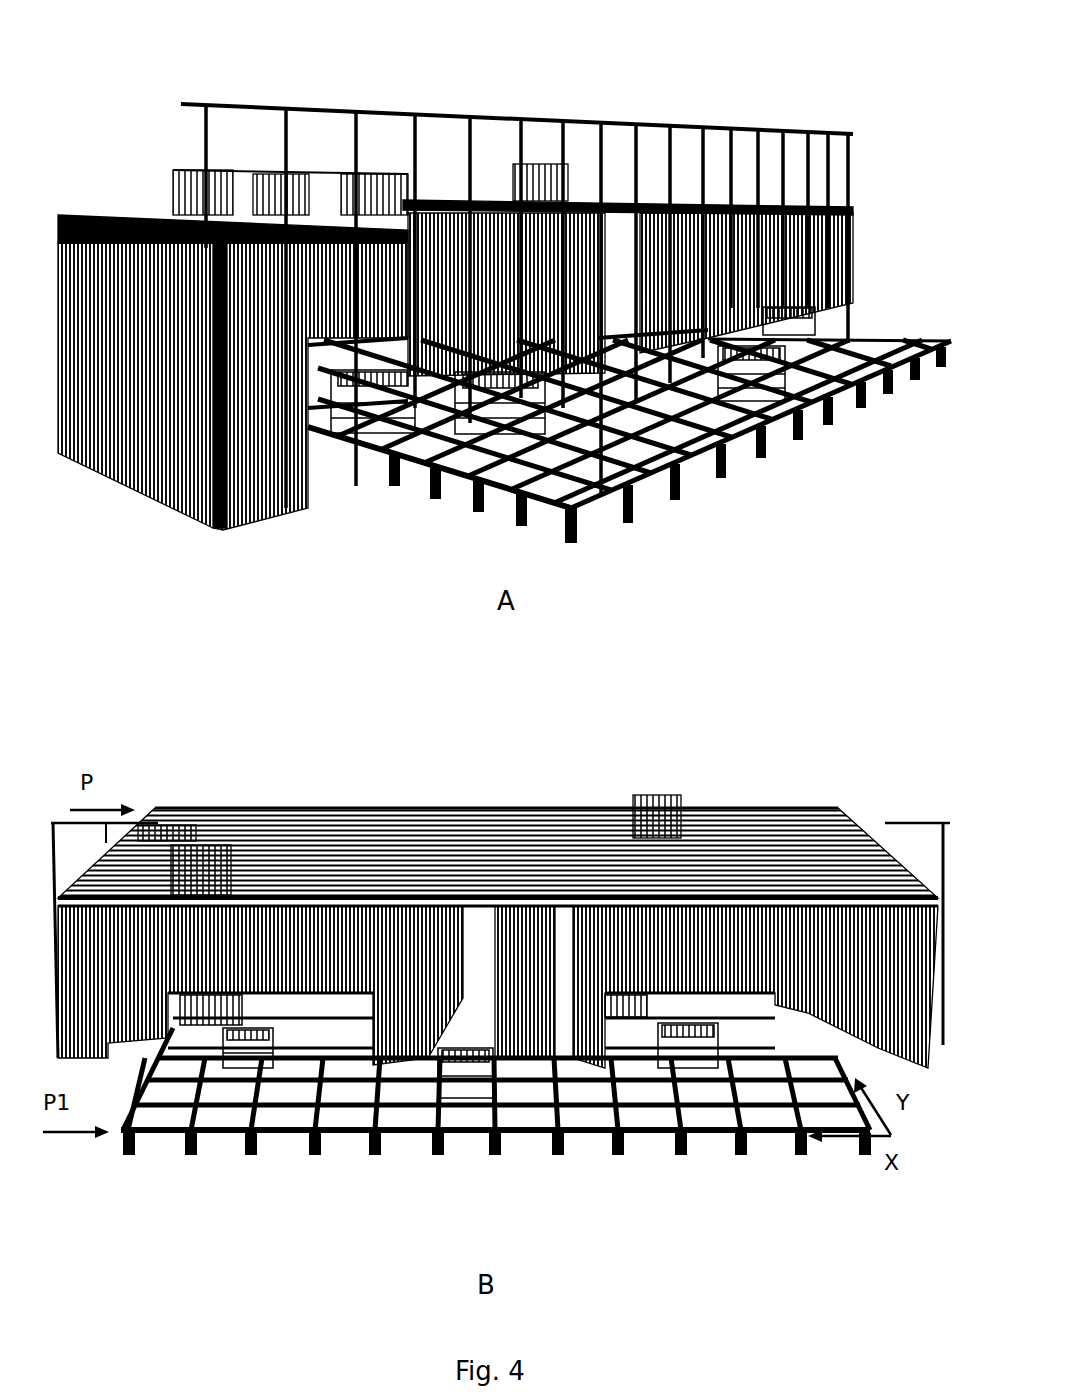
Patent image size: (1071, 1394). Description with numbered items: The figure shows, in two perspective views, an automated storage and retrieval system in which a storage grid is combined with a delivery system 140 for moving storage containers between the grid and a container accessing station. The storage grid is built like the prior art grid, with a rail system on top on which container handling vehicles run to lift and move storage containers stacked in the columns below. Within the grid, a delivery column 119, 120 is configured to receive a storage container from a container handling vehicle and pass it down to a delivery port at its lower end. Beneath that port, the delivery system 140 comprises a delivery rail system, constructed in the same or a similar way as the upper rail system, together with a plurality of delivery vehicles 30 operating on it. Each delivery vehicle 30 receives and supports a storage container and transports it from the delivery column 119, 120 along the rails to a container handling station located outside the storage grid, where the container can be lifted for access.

The delivery column 119 is at (485, 218).
The delivery column 120 is at (400, 180).
The delivery system 140 is at (378, 463).
The delivery vehicle 30 is at (687, 1025).